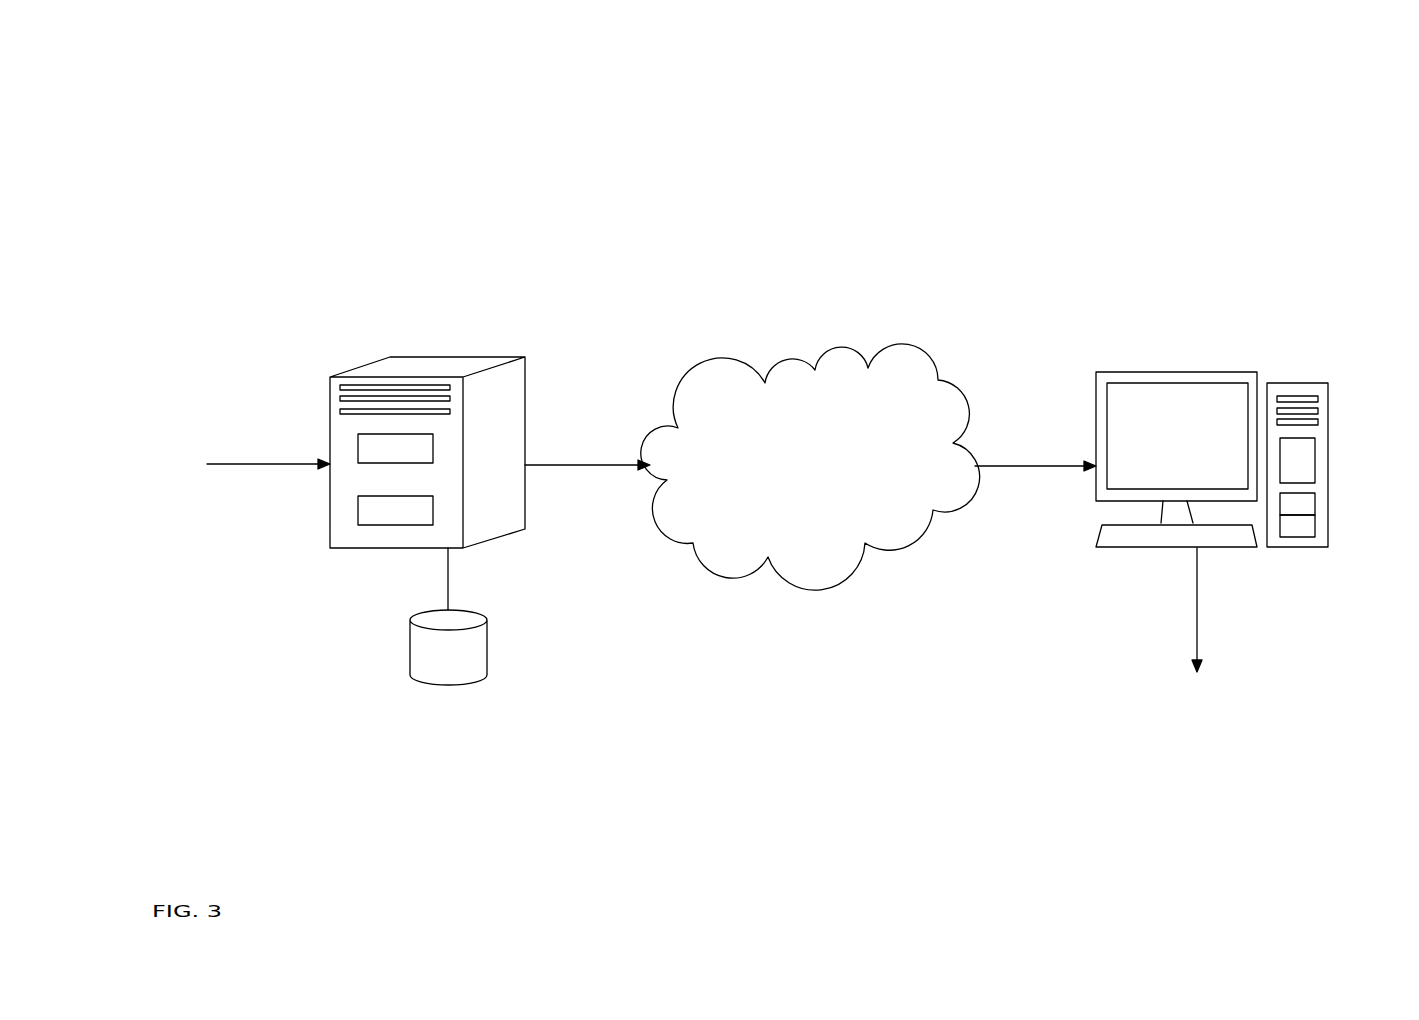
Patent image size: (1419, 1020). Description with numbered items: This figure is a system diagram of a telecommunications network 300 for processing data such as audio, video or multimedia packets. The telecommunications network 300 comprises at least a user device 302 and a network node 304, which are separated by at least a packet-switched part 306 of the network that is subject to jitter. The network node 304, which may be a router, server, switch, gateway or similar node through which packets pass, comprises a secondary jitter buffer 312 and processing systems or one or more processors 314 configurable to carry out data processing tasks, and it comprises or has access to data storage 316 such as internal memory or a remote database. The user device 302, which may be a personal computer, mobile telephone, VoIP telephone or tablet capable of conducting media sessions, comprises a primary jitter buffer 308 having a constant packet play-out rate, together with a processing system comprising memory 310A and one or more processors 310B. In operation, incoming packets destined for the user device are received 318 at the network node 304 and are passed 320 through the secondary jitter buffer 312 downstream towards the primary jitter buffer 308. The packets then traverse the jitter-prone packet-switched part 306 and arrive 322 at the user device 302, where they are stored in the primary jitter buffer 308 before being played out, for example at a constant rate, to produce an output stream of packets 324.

The telecommunications network 300 is at (231, 66).
The user device 302 is at (1195, 373).
The network node 304 is at (448, 365).
The packet-switched part 306 is at (792, 353).
The primary jitter buffer 308 is at (1310, 454).
The memory 310A is at (1310, 505).
The processors 310B is at (1310, 529).
The secondary jitter buffer 312 is at (360, 457).
The processors 314 is at (380, 522).
The data storage 316 is at (487, 675).
The receiving of incoming packets 318 is at (297, 458).
The passing of packets downstream 320 is at (624, 460).
The arrival of packets 322 is at (1067, 461).
The output stream of packets 324 is at (1233, 601).